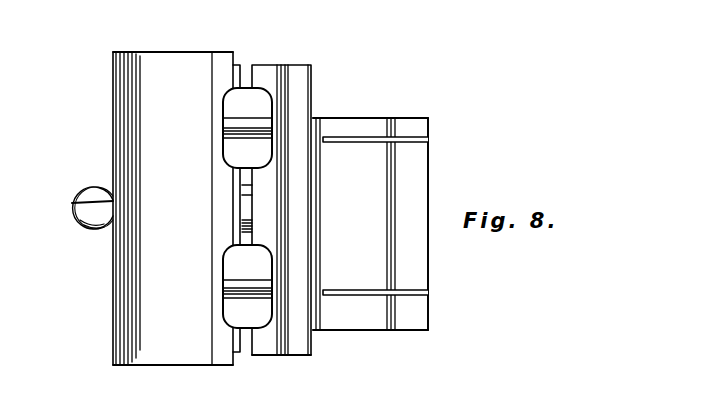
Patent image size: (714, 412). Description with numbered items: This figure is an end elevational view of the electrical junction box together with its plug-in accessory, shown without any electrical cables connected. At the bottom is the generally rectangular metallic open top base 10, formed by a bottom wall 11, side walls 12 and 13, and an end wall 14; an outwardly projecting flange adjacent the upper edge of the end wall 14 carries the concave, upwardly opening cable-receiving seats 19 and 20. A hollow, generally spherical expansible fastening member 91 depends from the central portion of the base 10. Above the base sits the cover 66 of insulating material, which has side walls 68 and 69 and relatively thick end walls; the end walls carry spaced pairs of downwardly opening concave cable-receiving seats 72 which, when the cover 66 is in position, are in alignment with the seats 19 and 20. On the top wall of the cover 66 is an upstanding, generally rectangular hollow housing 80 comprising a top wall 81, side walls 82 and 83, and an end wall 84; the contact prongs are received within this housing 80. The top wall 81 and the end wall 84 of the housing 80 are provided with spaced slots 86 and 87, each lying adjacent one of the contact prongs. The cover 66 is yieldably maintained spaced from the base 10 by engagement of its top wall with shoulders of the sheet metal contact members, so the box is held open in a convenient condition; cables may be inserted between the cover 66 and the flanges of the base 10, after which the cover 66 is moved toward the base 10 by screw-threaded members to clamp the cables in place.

The open top base 10 is at (110, 51).
The bottom wall 11 is at (113, 125).
The side wall 12 is at (198, 52).
The side wall 13 is at (172, 366).
The end wall 14 is at (152, 302).
The cable-receiving seat 19 is at (222, 307).
The cable-receiving seat 20 is at (223, 148).
The cover 66 is at (316, 63).
The side wall 68 is at (287, 65).
The side wall 69 is at (288, 353).
The cable-receiving seat 72 is at (296, 100).
The housing 80 is at (425, 113).
The top wall 81 is at (429, 189).
The side wall 82 is at (378, 117).
The side wall 83 is at (358, 333).
The end wall 84 is at (373, 240).
The slot 86 is at (429, 139).
The slot 87 is at (429, 293).
The expansible fastening member 91 is at (83, 231).